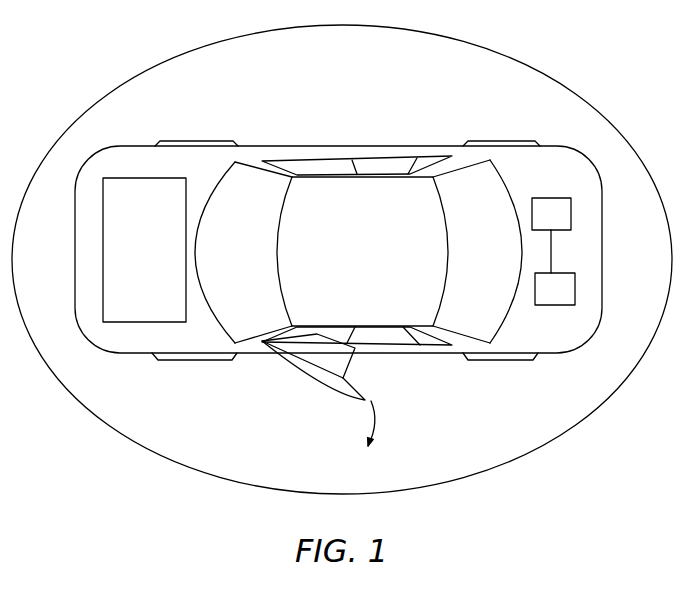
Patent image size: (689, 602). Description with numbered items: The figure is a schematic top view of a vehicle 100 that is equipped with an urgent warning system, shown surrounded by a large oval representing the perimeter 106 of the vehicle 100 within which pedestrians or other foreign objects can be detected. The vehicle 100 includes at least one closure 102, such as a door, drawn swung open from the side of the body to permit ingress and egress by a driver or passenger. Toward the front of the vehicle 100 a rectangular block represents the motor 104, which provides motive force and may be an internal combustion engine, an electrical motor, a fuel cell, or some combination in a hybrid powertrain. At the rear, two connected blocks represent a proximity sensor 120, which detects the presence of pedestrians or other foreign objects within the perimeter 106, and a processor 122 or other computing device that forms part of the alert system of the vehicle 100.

The vehicle 100 is at (394, 106).
The closure 102 is at (295, 394).
The motor 104 is at (130, 323).
The perimeter 106 is at (576, 93).
The proximity sensor 120 is at (565, 305).
The processor 122 is at (556, 198).